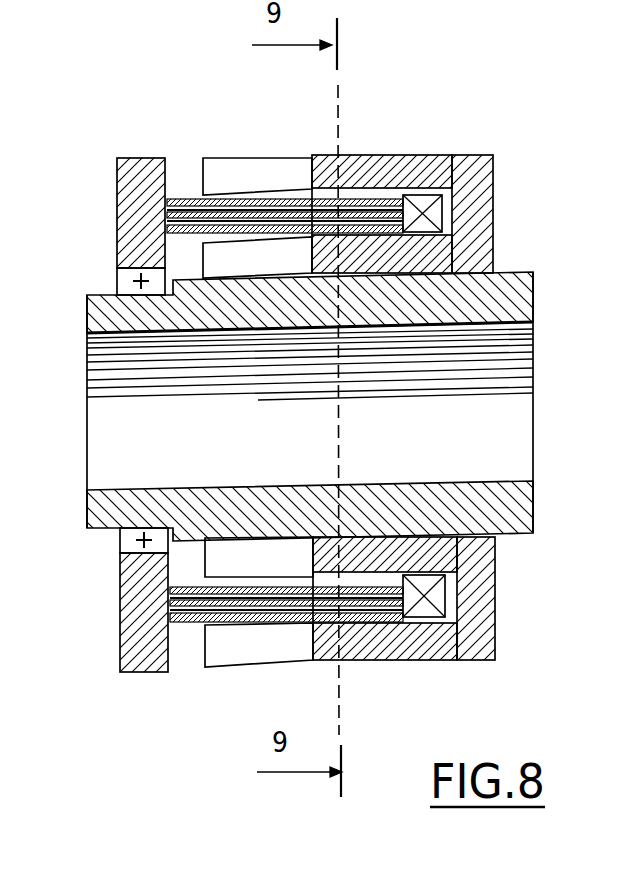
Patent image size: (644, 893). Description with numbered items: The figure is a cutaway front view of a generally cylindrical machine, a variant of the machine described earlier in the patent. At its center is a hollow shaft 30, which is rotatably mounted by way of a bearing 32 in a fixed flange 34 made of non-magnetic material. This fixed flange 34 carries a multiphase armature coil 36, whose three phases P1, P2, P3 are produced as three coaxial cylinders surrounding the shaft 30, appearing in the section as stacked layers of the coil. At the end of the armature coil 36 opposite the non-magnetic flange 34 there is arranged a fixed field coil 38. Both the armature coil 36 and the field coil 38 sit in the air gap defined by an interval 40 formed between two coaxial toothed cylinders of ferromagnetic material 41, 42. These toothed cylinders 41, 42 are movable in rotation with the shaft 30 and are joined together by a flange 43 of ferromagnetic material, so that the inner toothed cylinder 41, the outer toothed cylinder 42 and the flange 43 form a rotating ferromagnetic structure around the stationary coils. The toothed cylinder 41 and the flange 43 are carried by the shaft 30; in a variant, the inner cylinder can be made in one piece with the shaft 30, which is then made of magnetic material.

The hollow shaft 30 is at (279, 406).
The bearing 32 is at (121, 541).
The fixed flange 34 is at (116, 198).
The multiphase armature coil 36 is at (285, 201).
The fixed field coil 38 is at (483, 604).
The interval 40 is at (452, 210).
The toothed cylinder 41 is at (405, 528).
The toothed cylinder 42 is at (386, 156).
The flange 43 is at (487, 567).
The first phase P1 is at (276, 198).
The second phase P2 is at (238, 200).
The third phase P3 is at (190, 234).